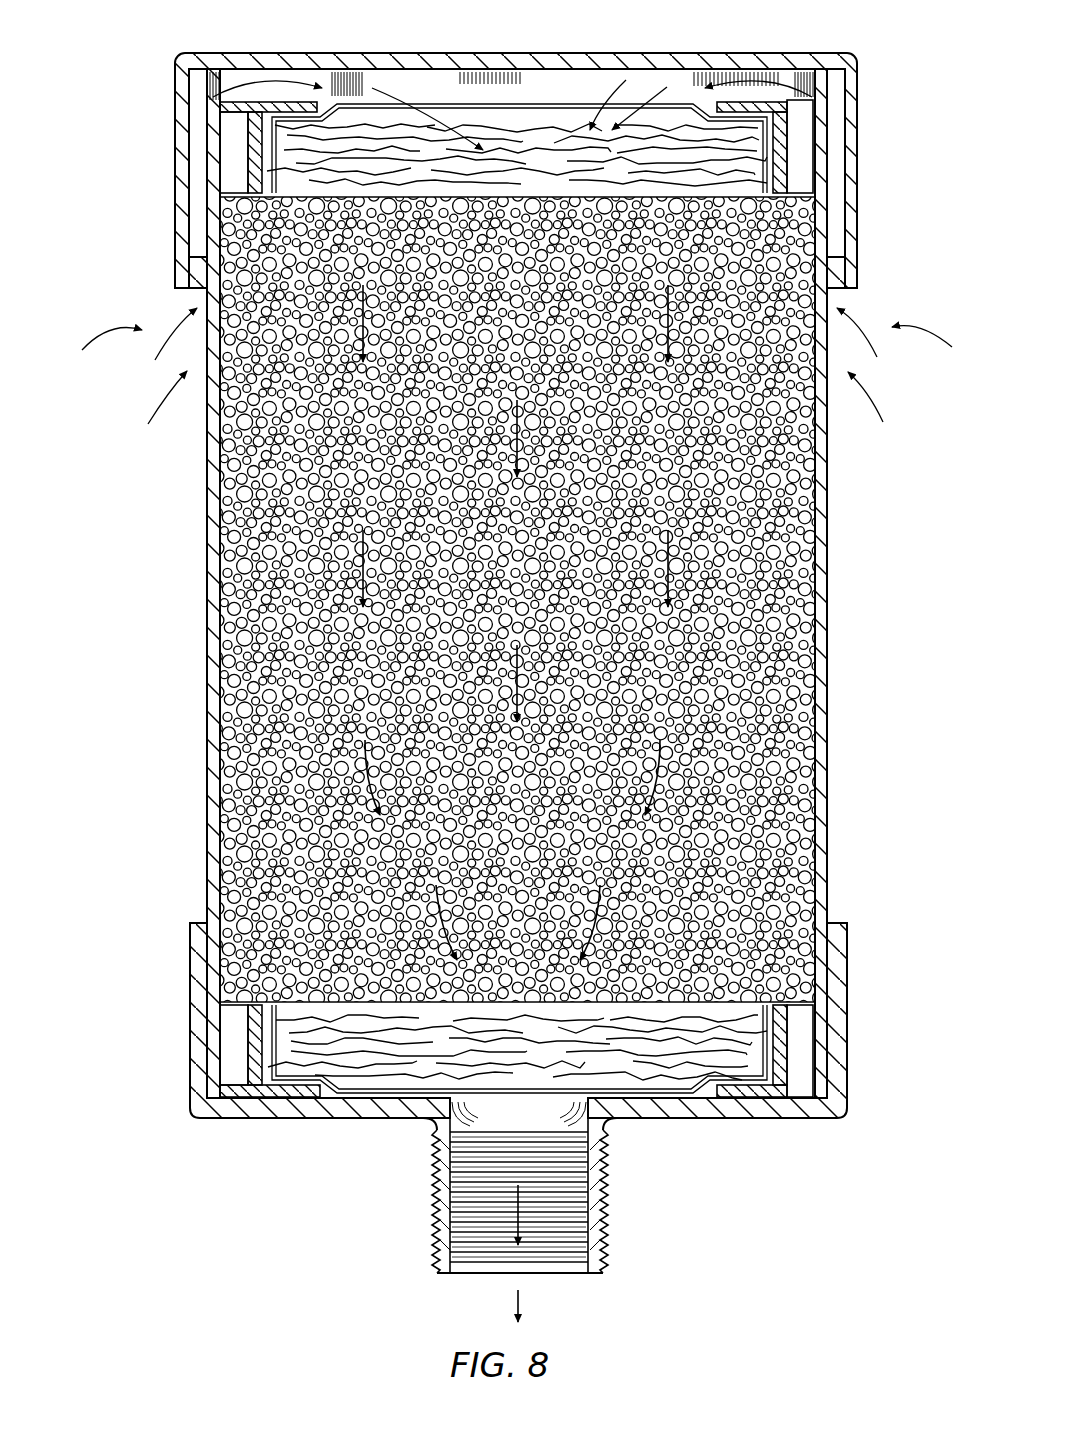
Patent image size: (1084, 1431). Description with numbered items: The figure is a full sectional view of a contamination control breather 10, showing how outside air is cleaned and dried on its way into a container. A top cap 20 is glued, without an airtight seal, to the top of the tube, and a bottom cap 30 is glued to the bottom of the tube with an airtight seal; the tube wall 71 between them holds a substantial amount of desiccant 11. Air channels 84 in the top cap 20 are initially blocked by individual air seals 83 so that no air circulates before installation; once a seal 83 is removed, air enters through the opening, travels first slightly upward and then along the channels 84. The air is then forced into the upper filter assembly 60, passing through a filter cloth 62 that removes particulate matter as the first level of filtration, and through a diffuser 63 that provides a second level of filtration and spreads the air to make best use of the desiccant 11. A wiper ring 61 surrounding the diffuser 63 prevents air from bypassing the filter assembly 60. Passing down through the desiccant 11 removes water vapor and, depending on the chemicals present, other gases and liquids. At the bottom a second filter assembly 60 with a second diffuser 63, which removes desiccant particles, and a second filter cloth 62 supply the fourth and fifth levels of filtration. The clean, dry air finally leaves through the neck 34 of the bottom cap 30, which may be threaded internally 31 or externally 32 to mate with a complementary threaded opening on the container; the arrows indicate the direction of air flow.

The contamination control breather 10 is at (517, 675).
The desiccant 11 is at (782, 582).
The top cap 20 is at (858, 193).
The bottom cap 30 is at (848, 975).
The internal threads 31 is at (583, 1265).
The external threads 32 is at (435, 1250).
The neck 34 is at (497, 1218).
The filter assembly 60 is at (250, 140).
The wiper ring 61 is at (780, 157).
The filter cloth 62 is at (420, 133).
The diffuser 63 is at (548, 150).
The housing body 71 is at (828, 480).
The air seal 83 is at (197, 293).
The channel 84 is at (837, 110).